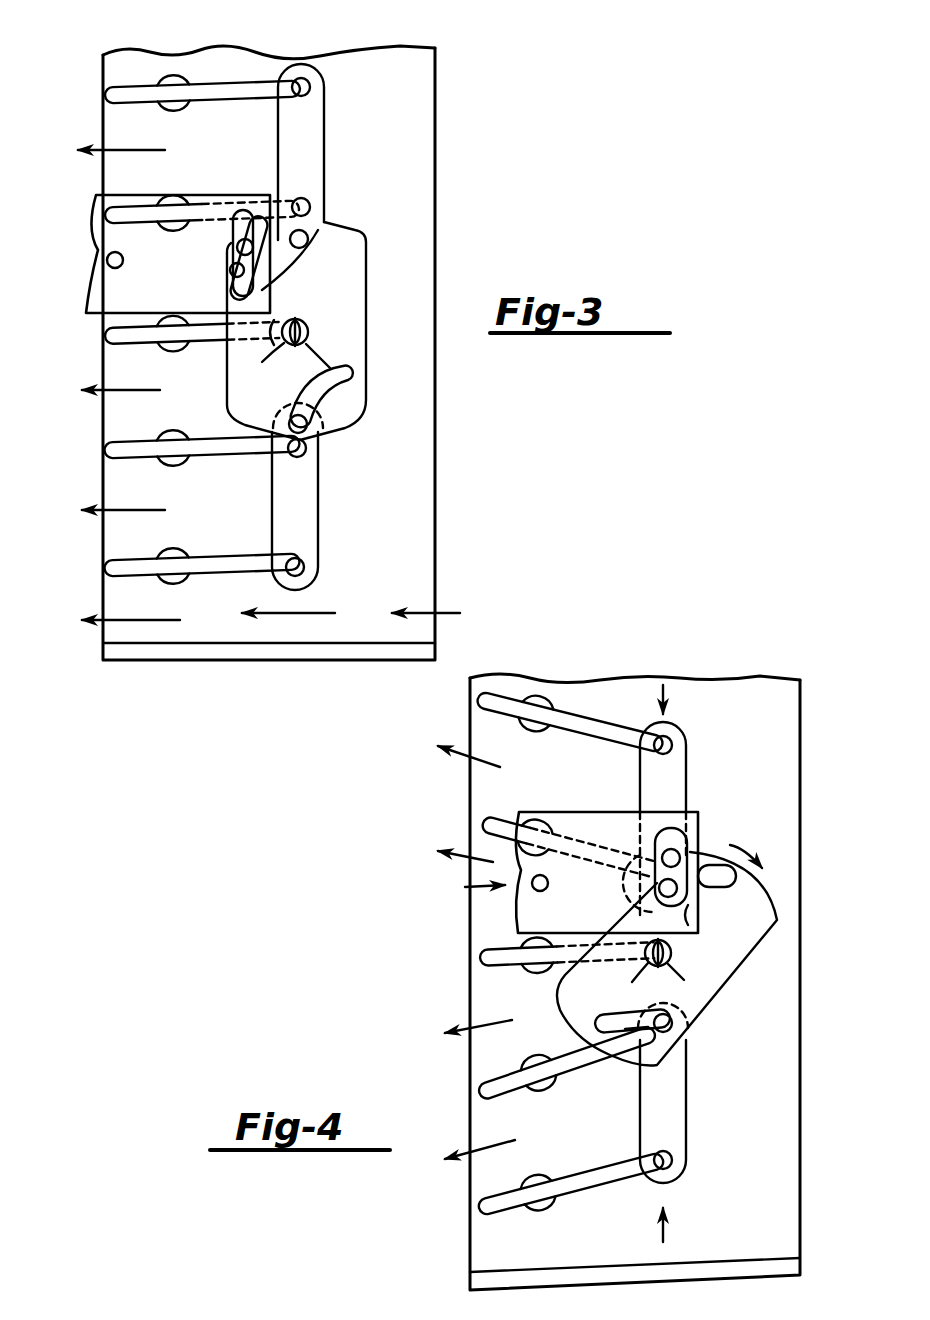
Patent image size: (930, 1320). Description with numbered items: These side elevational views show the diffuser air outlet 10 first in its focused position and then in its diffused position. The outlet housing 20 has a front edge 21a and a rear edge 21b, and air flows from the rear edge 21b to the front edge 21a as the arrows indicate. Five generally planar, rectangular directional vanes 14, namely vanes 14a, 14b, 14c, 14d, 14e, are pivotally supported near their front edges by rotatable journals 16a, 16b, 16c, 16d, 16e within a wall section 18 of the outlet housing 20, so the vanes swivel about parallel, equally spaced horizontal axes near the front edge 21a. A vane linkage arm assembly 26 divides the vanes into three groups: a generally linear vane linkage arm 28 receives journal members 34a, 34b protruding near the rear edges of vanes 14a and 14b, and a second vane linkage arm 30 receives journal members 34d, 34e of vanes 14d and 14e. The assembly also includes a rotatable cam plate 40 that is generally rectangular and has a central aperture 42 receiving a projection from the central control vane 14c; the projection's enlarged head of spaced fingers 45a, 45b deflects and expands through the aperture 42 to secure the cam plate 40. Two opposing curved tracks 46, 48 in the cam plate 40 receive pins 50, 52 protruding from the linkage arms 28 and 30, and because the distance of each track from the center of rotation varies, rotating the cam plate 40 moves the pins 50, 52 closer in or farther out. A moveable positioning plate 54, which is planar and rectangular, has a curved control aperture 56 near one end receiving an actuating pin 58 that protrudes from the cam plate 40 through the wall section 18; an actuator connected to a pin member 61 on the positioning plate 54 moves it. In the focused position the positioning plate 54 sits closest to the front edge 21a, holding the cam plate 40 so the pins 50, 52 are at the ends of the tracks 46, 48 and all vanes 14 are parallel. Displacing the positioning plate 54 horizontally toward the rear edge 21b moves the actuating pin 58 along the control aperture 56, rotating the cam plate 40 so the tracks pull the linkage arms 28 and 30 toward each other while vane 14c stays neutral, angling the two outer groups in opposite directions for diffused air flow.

In FIG. 3, the diffuser air outlet 10 is at (448, 190).
In FIG. 4, the diffuser air outlet 10 is at (692, 676).
In FIG. 3, the directional vanes 14 is at (228, 67).
In FIG. 4, the directional vanes 14 is at (602, 710).
In FIG. 3, the directional vane 14a is at (254, 102).
In FIG. 4, the directional vane 14a is at (497, 703).
In FIG. 3, the directional vane 14b is at (202, 203).
In FIG. 4, the directional vane 14b is at (486, 822).
In FIG. 3, the directional vane 14c is at (140, 362).
In FIG. 4, the directional vane 14c is at (492, 968).
In FIG. 3, the directional vane 14d is at (205, 441).
In FIG. 4, the directional vane 14d is at (486, 1090).
In FIG. 3, the directional vane 14e is at (210, 560).
In FIG. 4, the directional vane 14e is at (486, 1212).
In FIG. 3, the rotatable journal 16a is at (174, 100).
In FIG. 4, the rotatable journal 16a is at (570, 687).
In FIG. 3, the rotatable journal 16b is at (202, 183).
In FIG. 4, the rotatable journal 16b is at (566, 817).
In FIG. 3, the rotatable journal 16c is at (192, 347).
In FIG. 4, the rotatable journal 16c is at (566, 981).
In FIG. 3, the rotatable journal 16d is at (201, 427).
In FIG. 4, the rotatable journal 16d is at (567, 1081).
In FIG. 3, the rotatable journal 16e is at (201, 534).
In FIG. 4, the rotatable journal 16e is at (571, 1207).
In FIG. 3, the wall section 18 is at (410, 532).
In FIG. 4, the wall section 18 is at (790, 1177).
In FIG. 3, the outlet housing 20 is at (437, 62).
In FIG. 4, the outlet housing 20 is at (800, 695).
In FIG. 3, the front edge 21a is at (103, 590).
In FIG. 4, the front edge 21a is at (470, 1238).
In FIG. 3, the rear edge 21b is at (437, 590).
In FIG. 4, the rear edge 21b is at (800, 1215).
In FIG. 3, the vane linkage arm assembly 26 is at (374, 260).
In FIG. 4, the vane linkage arm assembly 26 is at (779, 897).
In FIG. 3, the vane linkage arm 28 is at (300, 155).
In FIG. 4, the vane linkage arm 28 is at (665, 790).
In FIG. 3, the vane linkage arm 30 is at (300, 515).
In FIG. 4, the vane linkage arm 30 is at (665, 1093).
In FIG. 3, the journal member 34a is at (310, 90).
In FIG. 4, the journal member 34a is at (672, 744).
In FIG. 3, the journal member 34b is at (310, 207).
In FIG. 3, the journal member 34d is at (310, 452).
In FIG. 3, the journal member 34e is at (305, 570).
In FIG. 4, the journal member 34e is at (672, 1160).
In FIG. 3, the cam plate 40 is at (368, 318).
In FIG. 4, the cam plate 40 is at (733, 967).
In FIG. 3, the central aperture 42 is at (320, 332).
In FIG. 4, the central aperture 42 is at (658, 953).
In FIG. 3, the finger 45a is at (280, 346).
In FIG. 4, the finger 45a is at (655, 967).
In FIG. 3, the finger 45b is at (320, 355).
In FIG. 4, the finger 45b is at (670, 966).
In FIG. 3, the track 46 is at (292, 276).
In FIG. 4, the track 46 is at (712, 853).
In FIG. 3, the track 48 is at (347, 372).
In FIG. 4, the track 48 is at (625, 1033).
In FIG. 3, the pin 50 is at (310, 240).
In FIG. 4, the pin 50 is at (690, 922).
In FIG. 3, the pin 52 is at (310, 424).
In FIG. 4, the pin 52 is at (672, 1030).
In FIG. 3, the positioning plate 54 is at (95, 215).
In FIG. 4, the positioning plate 54 is at (537, 913).
In FIG. 3, the control aperture 56 is at (230, 272).
In FIG. 4, the control aperture 56 is at (685, 845).
In FIG. 3, the actuating pin 58 is at (237, 245).
In FIG. 4, the actuating pin 58 is at (690, 858).
In FIG. 3, the pin member 61 is at (106, 260).
In FIG. 4, the pin member 61 is at (531, 885).